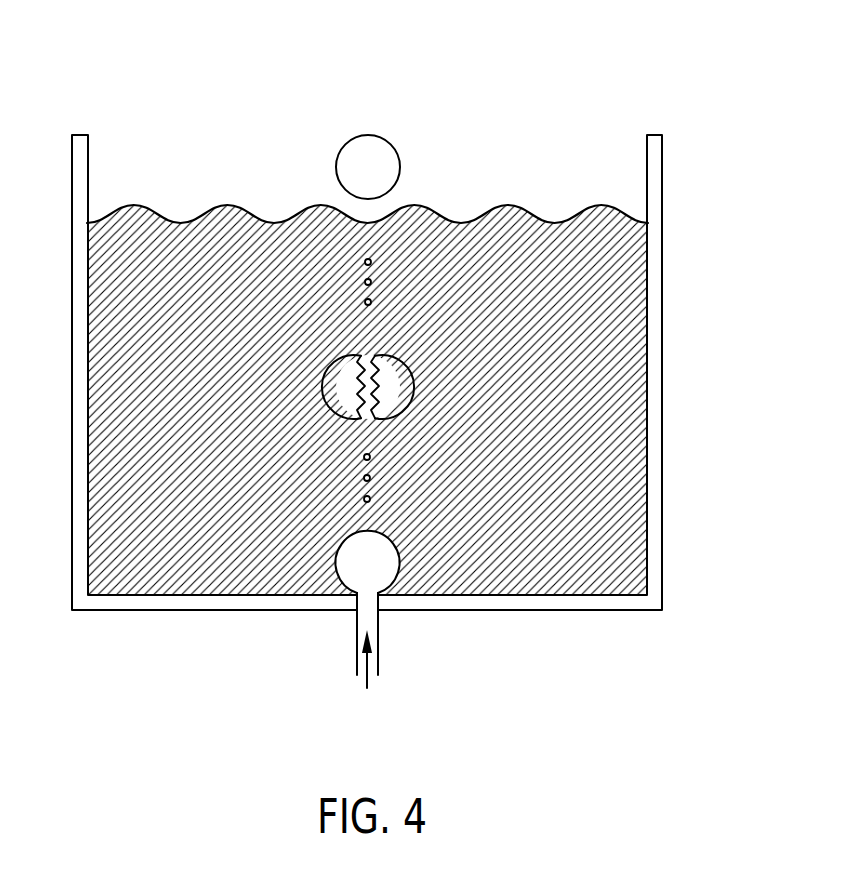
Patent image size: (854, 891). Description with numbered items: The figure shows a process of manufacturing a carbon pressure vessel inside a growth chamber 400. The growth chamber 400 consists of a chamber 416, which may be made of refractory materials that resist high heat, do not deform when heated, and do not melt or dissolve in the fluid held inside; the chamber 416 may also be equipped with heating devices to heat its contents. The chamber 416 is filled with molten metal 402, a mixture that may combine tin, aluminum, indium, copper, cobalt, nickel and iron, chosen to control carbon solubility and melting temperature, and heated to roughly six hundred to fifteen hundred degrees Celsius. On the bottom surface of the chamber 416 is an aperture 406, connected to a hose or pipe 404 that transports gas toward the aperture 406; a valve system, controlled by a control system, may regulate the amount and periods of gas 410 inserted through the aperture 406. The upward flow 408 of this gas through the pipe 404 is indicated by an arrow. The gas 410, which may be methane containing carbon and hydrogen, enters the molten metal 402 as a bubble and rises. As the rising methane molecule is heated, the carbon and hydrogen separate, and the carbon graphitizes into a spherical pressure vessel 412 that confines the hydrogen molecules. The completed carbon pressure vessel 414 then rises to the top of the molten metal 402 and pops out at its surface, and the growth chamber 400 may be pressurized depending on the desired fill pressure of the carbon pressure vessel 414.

The growth chamber 400 is at (86, 73).
The molten metal 402 is at (104, 368).
The hose or pipe 404 is at (358, 647).
The aperture 406 is at (363, 598).
The gas flow 408 is at (367, 682).
The gas 410 is at (399, 568).
The spherical pressure vessel 412 is at (400, 387).
The carbon pressure vessel 414 is at (367, 133).
The chamber 416 is at (88, 480).